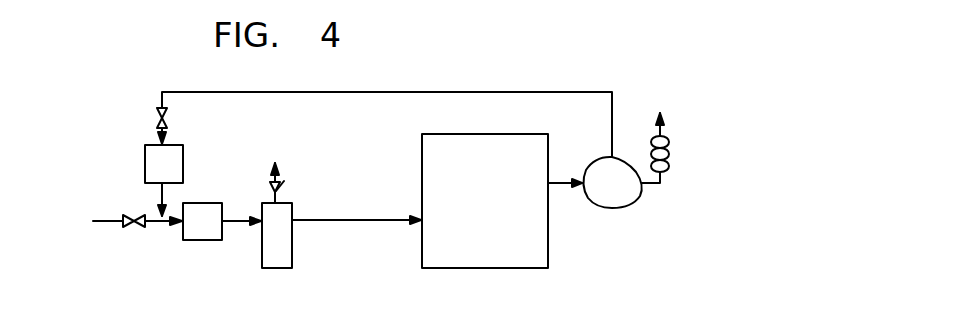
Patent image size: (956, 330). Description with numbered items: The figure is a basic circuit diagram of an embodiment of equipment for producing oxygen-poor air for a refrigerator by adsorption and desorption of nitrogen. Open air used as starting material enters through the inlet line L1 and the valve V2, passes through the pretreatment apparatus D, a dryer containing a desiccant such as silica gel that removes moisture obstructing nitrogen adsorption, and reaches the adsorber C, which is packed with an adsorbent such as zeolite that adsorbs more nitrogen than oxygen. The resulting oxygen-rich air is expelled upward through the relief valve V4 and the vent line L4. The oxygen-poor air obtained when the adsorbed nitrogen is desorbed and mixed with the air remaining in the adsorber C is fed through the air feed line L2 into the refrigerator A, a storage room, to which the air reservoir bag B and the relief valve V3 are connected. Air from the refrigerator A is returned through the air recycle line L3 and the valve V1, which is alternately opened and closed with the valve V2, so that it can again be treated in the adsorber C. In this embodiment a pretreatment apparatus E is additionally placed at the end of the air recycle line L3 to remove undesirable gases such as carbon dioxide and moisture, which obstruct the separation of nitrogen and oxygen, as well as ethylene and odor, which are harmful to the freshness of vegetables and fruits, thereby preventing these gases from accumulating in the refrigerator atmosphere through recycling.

The inlet line L1 is at (103, 221).
The valve V2 is at (129, 215).
The pretreatment apparatus D is at (200, 240).
The pretreatment apparatus E is at (180, 145).
The valve V1 is at (157, 114).
The air recycle line L3 is at (563, 181).
The adsorber C is at (271, 268).
The relief valve V4 is at (291, 186).
The vent line L4 is at (271, 161).
The air feed line L2 is at (337, 220).
The refrigerator A is at (487, 268).
The air reservoir bag B is at (605, 208).
The relief valve V3 is at (668, 148).